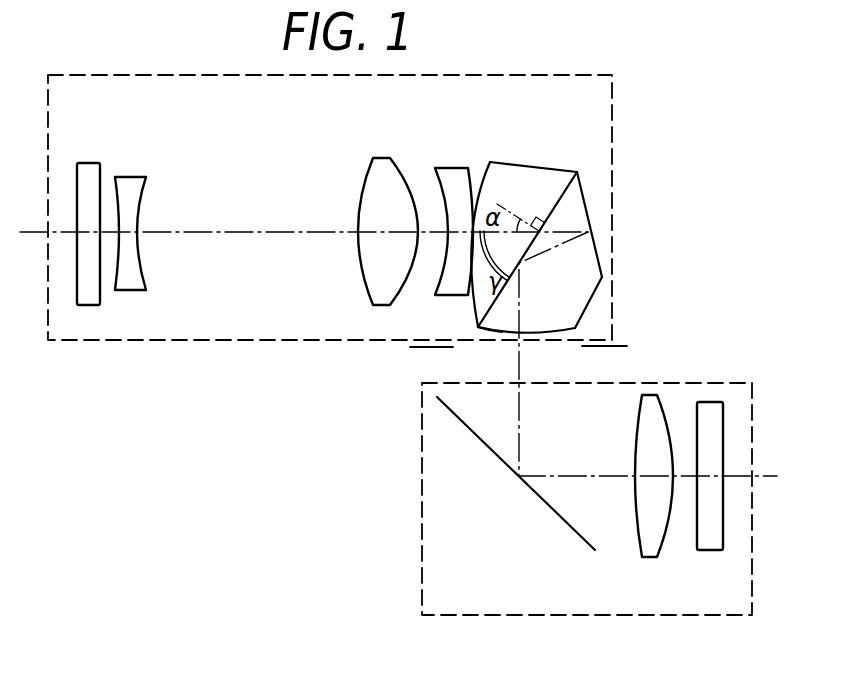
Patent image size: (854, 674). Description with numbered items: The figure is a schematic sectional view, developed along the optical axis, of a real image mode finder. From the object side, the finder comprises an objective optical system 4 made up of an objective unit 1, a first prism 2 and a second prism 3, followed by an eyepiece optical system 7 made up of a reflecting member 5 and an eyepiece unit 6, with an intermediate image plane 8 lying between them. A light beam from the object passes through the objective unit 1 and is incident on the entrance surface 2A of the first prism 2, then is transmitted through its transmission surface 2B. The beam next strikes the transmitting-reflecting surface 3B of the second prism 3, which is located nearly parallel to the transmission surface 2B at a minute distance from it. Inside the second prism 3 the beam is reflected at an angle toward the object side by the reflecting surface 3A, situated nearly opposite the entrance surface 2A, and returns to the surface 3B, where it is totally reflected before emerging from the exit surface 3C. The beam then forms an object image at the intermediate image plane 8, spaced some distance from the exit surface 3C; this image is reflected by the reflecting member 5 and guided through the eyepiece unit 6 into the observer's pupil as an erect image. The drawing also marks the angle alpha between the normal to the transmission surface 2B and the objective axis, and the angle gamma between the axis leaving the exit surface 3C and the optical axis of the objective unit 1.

The objective unit 1 is at (472, 140).
The first prism 2 is at (568, 201).
The entrance surface 2A is at (482, 176).
The transmission surface 2B is at (558, 187).
The second prism 3 is at (509, 289).
The reflecting surface 3A is at (588, 205).
The transmitting-reflecting surface 3B is at (488, 313).
The exit surface 3C is at (545, 324).
The objective optical system 4 is at (120, 343).
The reflecting member 5 is at (475, 438).
The eyepiece unit 6 is at (732, 558).
The eyepiece optical system 7 is at (422, 497).
The intermediate image plane 8 is at (614, 346).